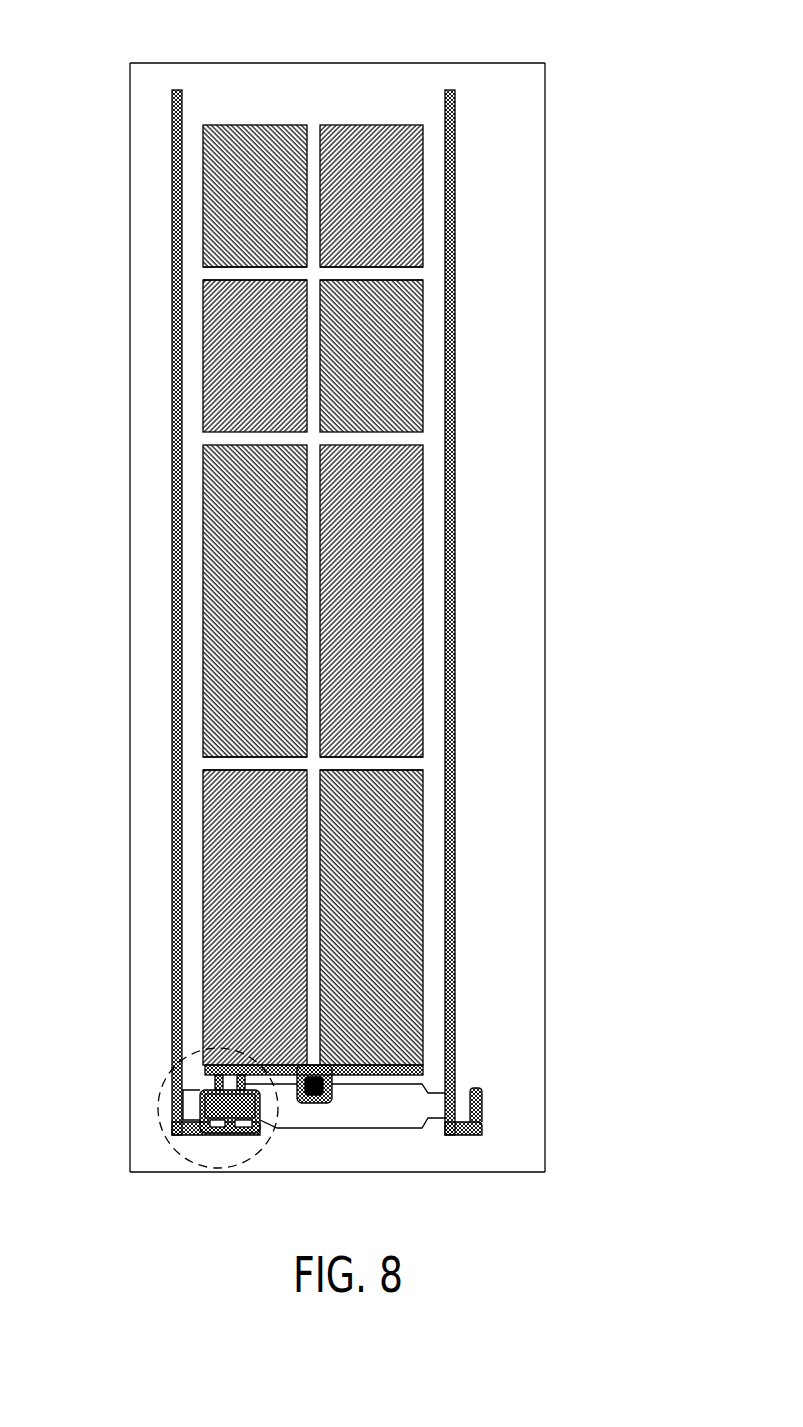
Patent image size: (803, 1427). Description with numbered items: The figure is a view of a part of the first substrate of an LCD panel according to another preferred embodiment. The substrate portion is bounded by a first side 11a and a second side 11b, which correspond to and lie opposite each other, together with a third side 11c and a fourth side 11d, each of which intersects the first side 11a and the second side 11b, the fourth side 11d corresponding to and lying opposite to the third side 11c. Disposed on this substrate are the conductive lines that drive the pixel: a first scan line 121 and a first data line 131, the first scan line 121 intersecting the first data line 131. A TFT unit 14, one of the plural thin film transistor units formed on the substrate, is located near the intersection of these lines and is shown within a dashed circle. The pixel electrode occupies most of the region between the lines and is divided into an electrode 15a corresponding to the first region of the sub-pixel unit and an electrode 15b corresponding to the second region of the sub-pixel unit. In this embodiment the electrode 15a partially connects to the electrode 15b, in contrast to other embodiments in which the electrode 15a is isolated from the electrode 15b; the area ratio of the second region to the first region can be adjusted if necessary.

The first side 11a is at (130, 652).
The second side 11b is at (545, 611).
The third side 11c is at (322, 63).
The fourth side 11d is at (322, 1172).
The first scan line 121 is at (172, 937).
The first data line 131 is at (423, 1068).
The TFT unit 14 is at (158, 1102).
The electrode corresponding to the first region 15a is at (423, 273).
The electrode corresponding to the second region 15b is at (423, 766).